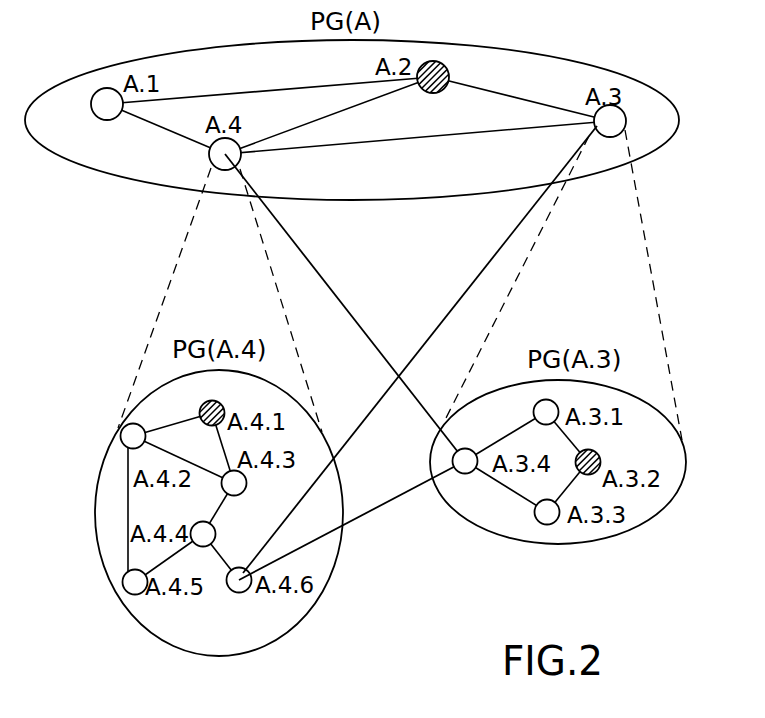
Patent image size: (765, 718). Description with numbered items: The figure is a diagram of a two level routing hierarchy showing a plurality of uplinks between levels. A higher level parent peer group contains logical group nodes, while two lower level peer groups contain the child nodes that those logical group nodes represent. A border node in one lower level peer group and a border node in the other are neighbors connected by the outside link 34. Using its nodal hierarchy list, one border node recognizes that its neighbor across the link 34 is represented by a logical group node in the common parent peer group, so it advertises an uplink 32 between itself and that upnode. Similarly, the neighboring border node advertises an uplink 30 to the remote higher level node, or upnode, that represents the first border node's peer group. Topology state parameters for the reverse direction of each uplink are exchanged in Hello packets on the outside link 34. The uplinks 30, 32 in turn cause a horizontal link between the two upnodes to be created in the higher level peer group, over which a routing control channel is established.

The uplink 30 is at (360, 419).
The uplink 32 is at (422, 407).
The link 34 is at (388, 503).